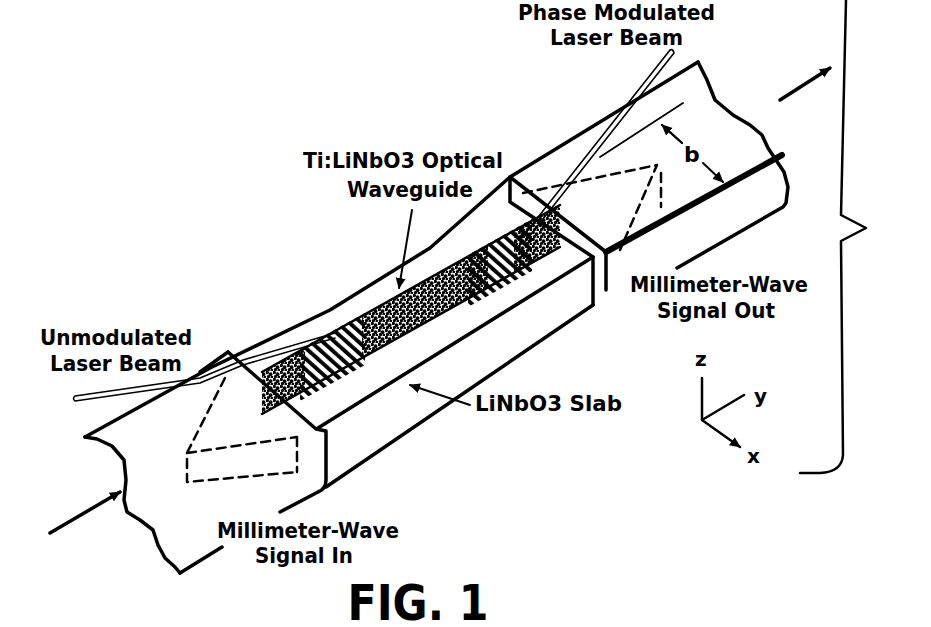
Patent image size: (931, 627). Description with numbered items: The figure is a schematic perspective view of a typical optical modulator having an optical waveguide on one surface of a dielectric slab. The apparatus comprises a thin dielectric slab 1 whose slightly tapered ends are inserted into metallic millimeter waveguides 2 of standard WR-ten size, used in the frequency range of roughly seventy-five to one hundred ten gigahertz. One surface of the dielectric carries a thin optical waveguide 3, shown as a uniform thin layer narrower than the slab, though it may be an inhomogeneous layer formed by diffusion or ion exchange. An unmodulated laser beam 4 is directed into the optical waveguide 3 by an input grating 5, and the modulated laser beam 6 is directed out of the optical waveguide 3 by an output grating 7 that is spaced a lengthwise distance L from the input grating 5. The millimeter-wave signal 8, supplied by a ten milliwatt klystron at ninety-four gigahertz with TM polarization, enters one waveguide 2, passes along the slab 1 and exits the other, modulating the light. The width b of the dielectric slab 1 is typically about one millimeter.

The dielectric slab 1 is at (376, 408).
The metallic millimeter waveguides 2 is at (298, 493).
The optical waveguide 3 is at (380, 312).
The unmodulated laser beam 4 is at (110, 398).
The input grating 5 is at (363, 330).
The modulated laser beam 6 is at (647, 73).
The output grating 7 is at (505, 290).
The millimeter-wave signal 8 is at (82, 513).